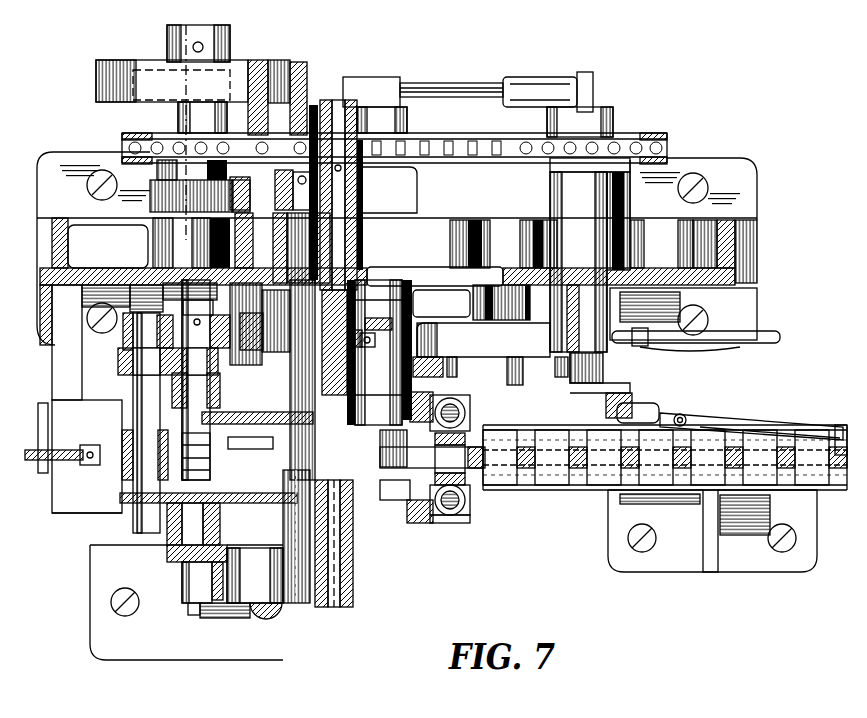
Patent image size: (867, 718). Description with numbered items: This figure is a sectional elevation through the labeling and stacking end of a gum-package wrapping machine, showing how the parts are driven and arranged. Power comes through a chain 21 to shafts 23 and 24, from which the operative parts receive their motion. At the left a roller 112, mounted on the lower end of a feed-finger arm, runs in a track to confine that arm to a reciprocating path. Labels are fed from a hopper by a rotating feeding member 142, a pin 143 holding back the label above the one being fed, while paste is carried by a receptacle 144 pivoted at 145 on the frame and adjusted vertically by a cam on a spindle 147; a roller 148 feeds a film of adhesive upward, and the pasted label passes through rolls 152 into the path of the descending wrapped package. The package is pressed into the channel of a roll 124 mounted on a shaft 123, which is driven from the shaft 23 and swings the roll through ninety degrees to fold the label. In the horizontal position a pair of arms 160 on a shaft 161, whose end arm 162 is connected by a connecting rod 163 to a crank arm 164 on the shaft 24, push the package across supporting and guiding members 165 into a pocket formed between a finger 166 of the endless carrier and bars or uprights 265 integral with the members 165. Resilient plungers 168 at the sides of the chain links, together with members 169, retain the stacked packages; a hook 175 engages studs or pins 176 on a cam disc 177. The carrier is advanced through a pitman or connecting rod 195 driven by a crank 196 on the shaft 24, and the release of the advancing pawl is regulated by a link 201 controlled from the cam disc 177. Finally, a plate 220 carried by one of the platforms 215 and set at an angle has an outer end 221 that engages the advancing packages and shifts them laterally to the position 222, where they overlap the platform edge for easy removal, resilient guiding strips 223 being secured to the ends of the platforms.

The chain 21 is at (662, 144).
The shaft 23 is at (215, 27).
The shaft 24 is at (562, 237).
The roller 112 is at (358, 262).
The shaft 123 is at (358, 312).
The roll 124 is at (357, 532).
The rotating feeding member 142 is at (110, 480).
The pin 143 is at (83, 462).
The receptacle 144 is at (80, 514).
The pivot 145 is at (54, 356).
The spindle 147 is at (188, 616).
The roller 148 is at (243, 443).
The rolls 152 is at (280, 500).
The arms 160 is at (294, 456).
The shaft 161 is at (395, 508).
The arm 162 is at (408, 128).
The connecting rod 163 is at (428, 94).
The crank arm 164 is at (510, 82).
The supporting and guiding members 165 is at (408, 512).
The fingers 166 is at (481, 490).
The plungers 168 is at (470, 515).
The members 169 is at (452, 427).
The hook 175 is at (440, 357).
The studs or pins 176 is at (562, 372).
The cam disc 177 is at (499, 356).
The pitman or connecting rod 195 is at (757, 412).
The crank 196 is at (632, 388).
The link 201 is at (781, 338).
The platforms 215 is at (778, 427).
The plate 220 is at (708, 425).
The outer end 221 is at (826, 440).
The laterally shifted position 222 is at (827, 513).
The guiding strips 223 is at (468, 435).
The bars or uprights 265 is at (420, 523).